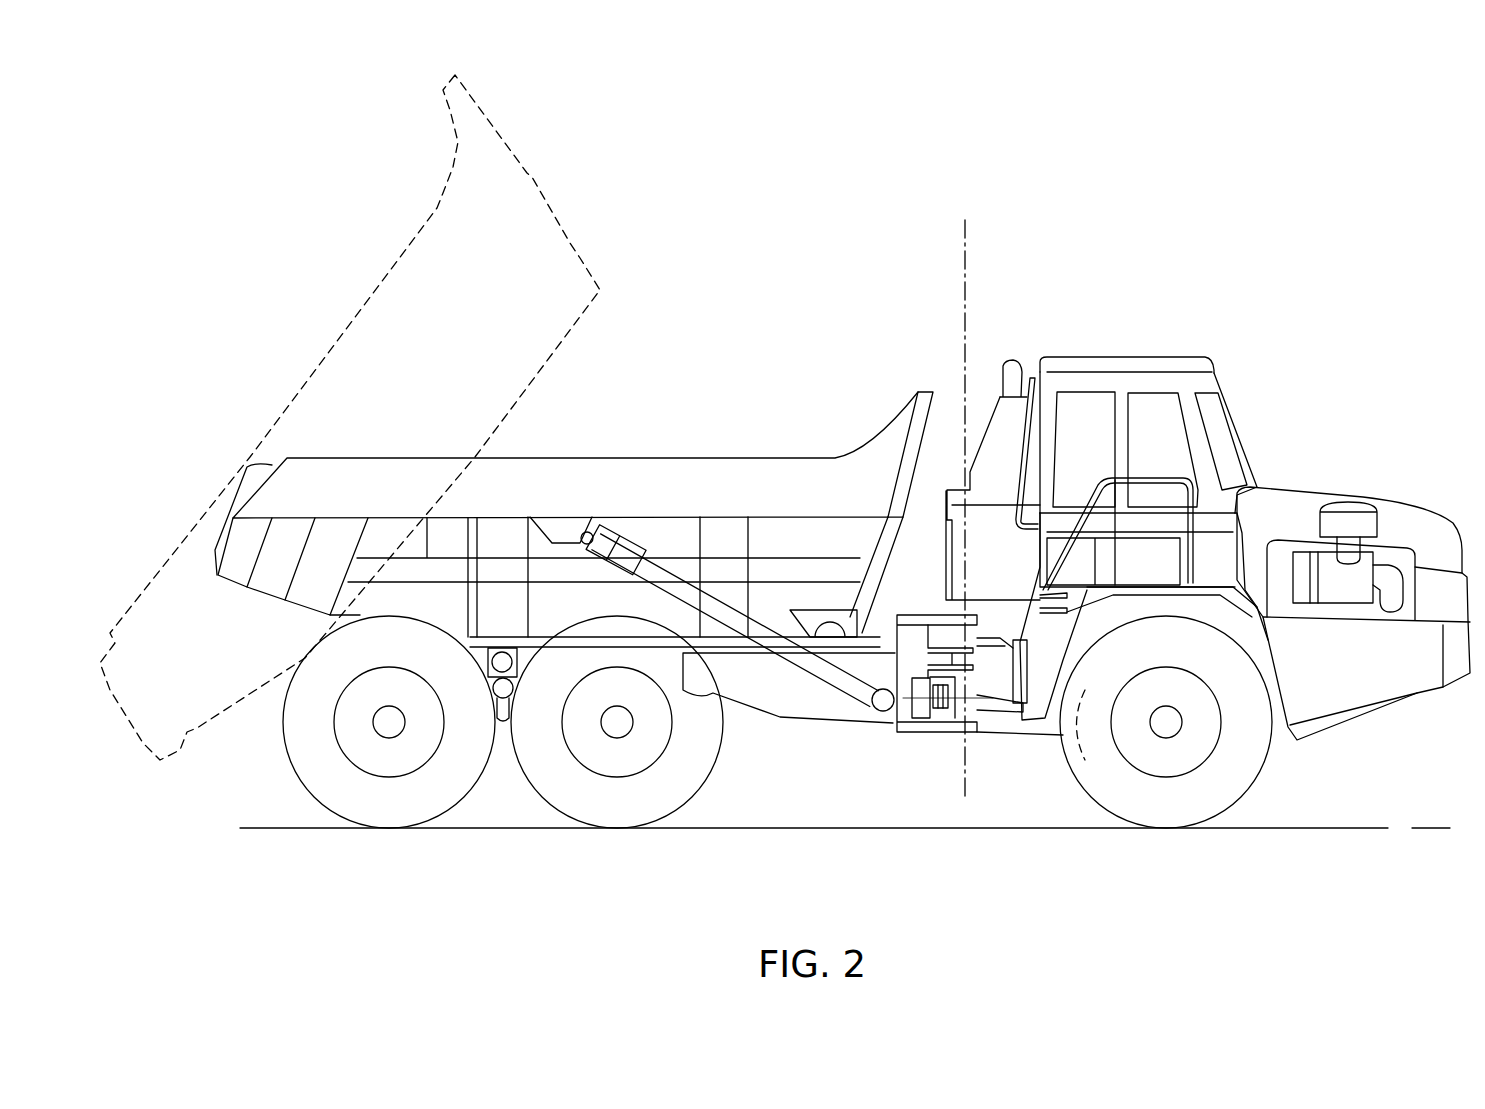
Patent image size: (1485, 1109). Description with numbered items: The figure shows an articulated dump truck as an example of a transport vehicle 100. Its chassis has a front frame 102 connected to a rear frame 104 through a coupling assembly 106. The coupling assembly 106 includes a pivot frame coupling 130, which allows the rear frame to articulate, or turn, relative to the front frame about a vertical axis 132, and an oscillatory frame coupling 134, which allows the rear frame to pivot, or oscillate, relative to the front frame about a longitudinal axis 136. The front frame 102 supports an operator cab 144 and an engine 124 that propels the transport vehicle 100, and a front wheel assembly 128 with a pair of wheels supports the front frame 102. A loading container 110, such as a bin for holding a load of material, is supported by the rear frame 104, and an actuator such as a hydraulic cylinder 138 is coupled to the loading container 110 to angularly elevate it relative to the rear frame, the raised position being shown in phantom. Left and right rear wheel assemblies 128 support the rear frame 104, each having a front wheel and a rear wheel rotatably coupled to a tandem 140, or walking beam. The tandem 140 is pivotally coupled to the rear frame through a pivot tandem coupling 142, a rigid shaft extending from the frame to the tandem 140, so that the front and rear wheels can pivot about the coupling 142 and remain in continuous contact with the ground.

The transport vehicle 100 is at (1235, 136).
The front frame 102 is at (1323, 733).
The rear frame 104 is at (760, 675).
The coupling assembly 106 is at (873, 762).
The loading container 110 is at (572, 243).
The engine 124 is at (1337, 575).
The wheel assembly 128 is at (378, 797).
The pivot frame coupling 130 is at (996, 732).
The vertical axis 132 is at (963, 276).
The oscillatory frame coupling 134 is at (930, 718).
The longitudinal axis 136 is at (1075, 768).
The cylinder 138 is at (653, 570).
The tandem 140 is at (500, 720).
The pivot tandem coupling 142 is at (513, 663).
The operator cab 144 is at (1100, 357).